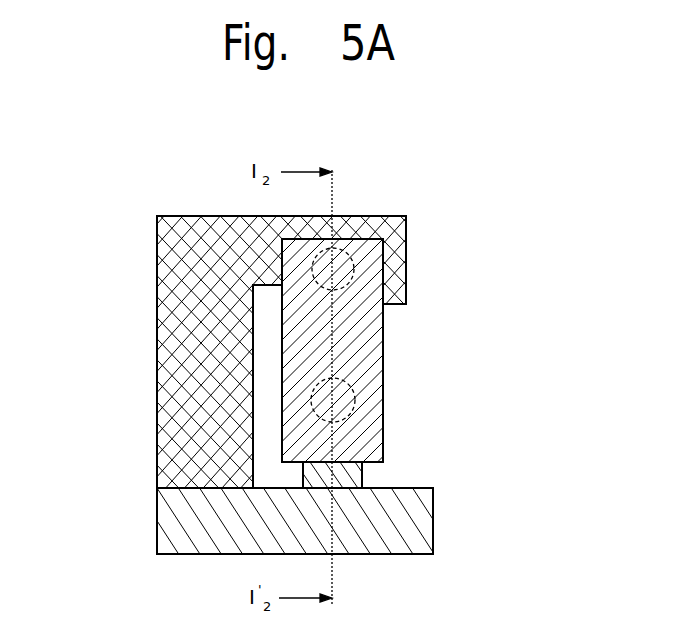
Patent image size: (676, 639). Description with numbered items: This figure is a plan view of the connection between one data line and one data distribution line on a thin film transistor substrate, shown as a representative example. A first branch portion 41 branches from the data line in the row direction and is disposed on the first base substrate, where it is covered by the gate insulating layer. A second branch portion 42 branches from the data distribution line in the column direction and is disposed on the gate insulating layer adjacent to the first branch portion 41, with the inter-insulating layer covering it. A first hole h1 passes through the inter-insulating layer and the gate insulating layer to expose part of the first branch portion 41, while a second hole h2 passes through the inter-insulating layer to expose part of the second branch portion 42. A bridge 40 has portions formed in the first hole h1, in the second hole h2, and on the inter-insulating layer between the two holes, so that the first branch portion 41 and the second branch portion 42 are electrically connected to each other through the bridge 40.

The bridge 40 is at (383, 346).
The first branch portion 41 is at (394, 263).
The second branch portion 42 is at (363, 478).
The first hole h1 is at (347, 252).
The second hole h2 is at (353, 394).